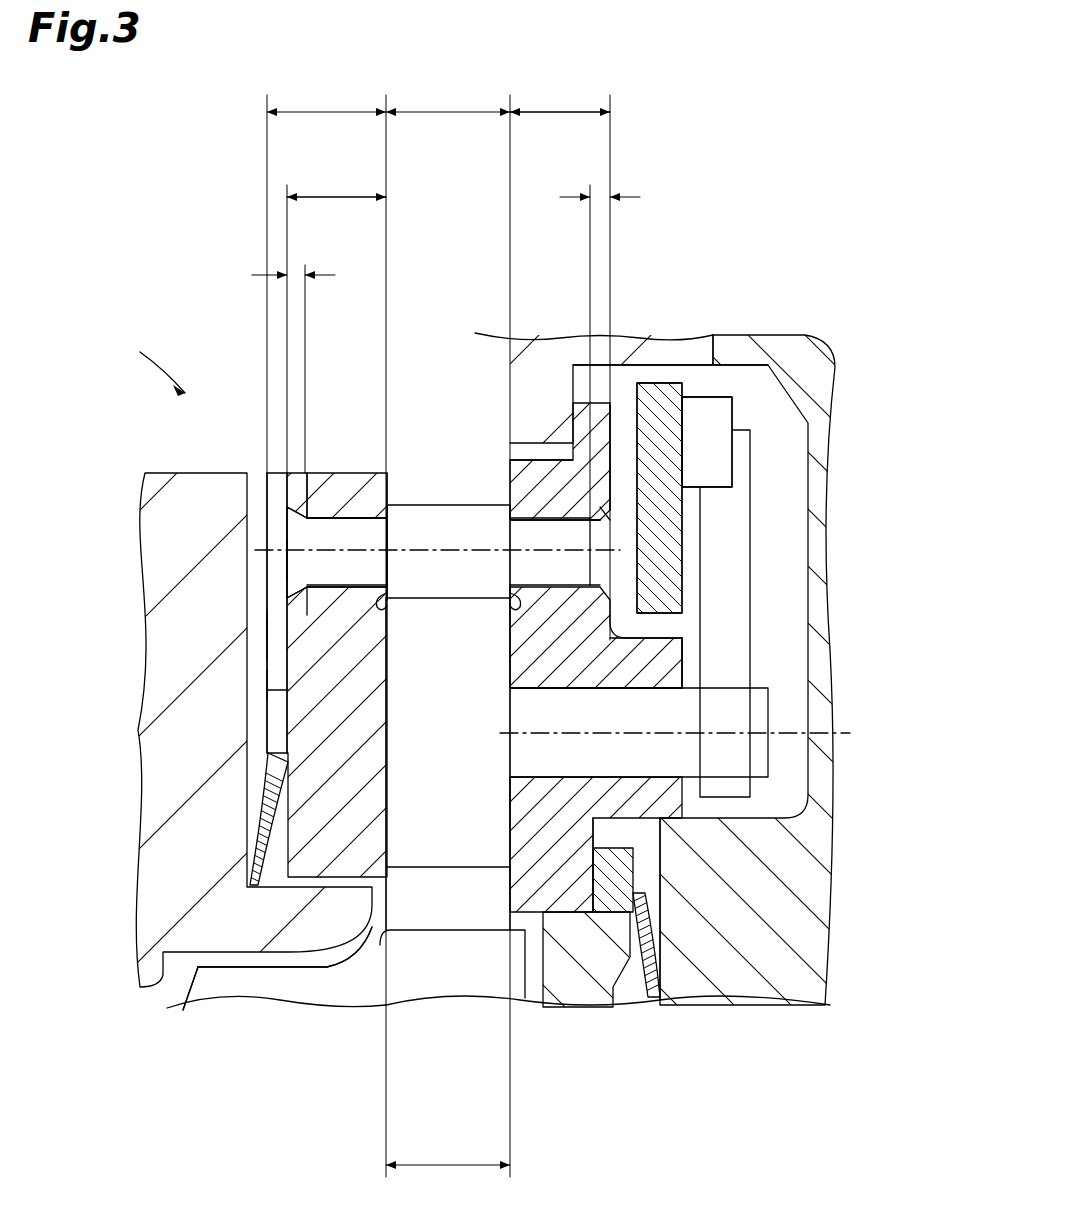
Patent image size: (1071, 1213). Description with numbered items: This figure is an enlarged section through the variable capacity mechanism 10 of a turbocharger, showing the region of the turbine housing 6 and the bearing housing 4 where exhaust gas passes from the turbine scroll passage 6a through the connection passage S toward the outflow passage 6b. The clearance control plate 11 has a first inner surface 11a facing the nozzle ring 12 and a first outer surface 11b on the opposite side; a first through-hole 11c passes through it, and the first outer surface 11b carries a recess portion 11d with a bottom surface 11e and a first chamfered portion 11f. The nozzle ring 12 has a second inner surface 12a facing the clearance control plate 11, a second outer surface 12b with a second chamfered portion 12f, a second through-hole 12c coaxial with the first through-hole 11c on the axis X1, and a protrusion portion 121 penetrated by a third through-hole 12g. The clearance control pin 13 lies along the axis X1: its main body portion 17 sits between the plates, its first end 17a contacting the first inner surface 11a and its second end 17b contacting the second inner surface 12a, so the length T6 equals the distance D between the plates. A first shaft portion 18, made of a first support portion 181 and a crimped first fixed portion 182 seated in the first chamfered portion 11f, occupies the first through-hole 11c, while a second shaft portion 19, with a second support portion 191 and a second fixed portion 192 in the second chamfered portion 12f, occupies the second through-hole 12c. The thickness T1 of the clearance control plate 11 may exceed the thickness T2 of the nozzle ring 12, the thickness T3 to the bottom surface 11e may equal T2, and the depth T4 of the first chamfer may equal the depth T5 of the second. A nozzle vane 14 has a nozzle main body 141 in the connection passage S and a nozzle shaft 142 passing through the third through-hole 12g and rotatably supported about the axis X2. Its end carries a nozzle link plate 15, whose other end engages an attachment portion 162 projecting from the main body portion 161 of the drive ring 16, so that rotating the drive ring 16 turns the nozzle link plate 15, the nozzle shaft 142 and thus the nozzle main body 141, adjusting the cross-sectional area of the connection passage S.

The bearing housing 4 is at (830, 342).
The turbine housing 6 is at (158, 799).
The turbine scroll passage 6a is at (507, 365).
The outflow passage 6b is at (160, 978).
The variable capacity mechanism 10 is at (147, 358).
The clearance control plate 11 is at (277, 718).
The first inner surface 11a is at (395, 480).
The first outer surface 11b is at (267, 683).
The first through-hole 11c is at (325, 518).
The recess portion 11d is at (265, 628).
The bottom surface 11e is at (266, 640).
The first chamfered portion 11f is at (285, 562).
The nozzle ring 12 is at (700, 610).
The second inner surface 12a is at (517, 460).
The second outer surface 12b is at (622, 470).
The second through-hole 12c is at (520, 520).
The second chamfered portion 12f is at (705, 580).
The third through-hole 12g is at (640, 700).
The protrusion portion 121 is at (660, 665).
The clearance control pin 13 is at (428, 500).
The nozzle vane 14 is at (485, 862).
The nozzle main body 141 is at (433, 850).
The nozzle shaft 142 is at (752, 750).
The nozzle link plate 15 is at (745, 555).
The drive ring 16 is at (675, 413).
The main body portion 161 is at (668, 385).
The attachment portion 162 is at (718, 395).
The main body portion 17 is at (410, 505).
The first end 17a is at (387, 600).
The second end 17b is at (513, 603).
The first shaft portion 18 is at (385, 500).
The first support portion 181 is at (355, 520).
The first fixed portion 182 is at (268, 535).
The second shaft portion 19 is at (640, 480).
The second support portion 191 is at (600, 527).
The second fixed portion 192 is at (605, 545).
The connection passage S is at (278, 695).
The axis X1 is at (257, 548).
The axis X2 is at (850, 733).
The distance D is at (448, 1149).
The thickness T1 is at (326, 98).
The thickness T2 is at (560, 98).
The thickness T3 is at (336, 184).
The depth T4 is at (297, 275).
The depth T5 is at (598, 197).
The length T6 is at (448, 98).